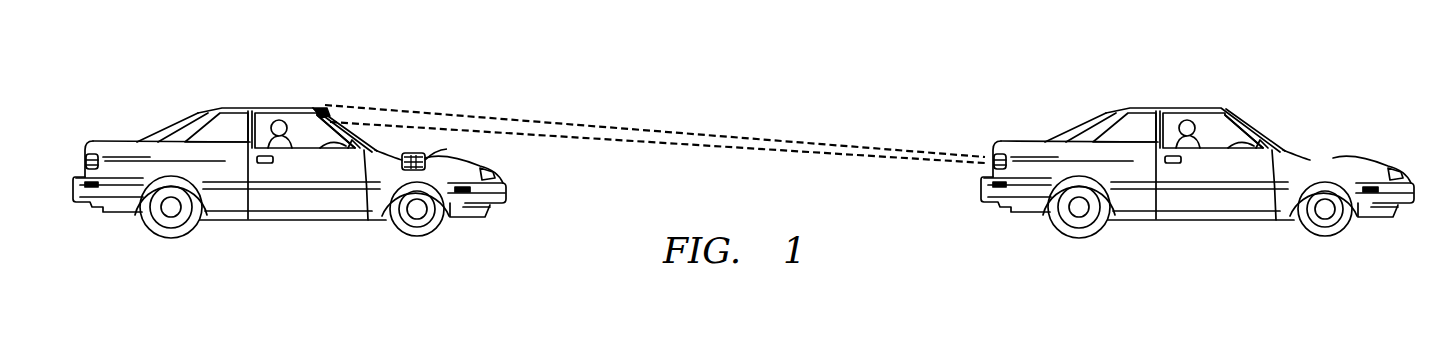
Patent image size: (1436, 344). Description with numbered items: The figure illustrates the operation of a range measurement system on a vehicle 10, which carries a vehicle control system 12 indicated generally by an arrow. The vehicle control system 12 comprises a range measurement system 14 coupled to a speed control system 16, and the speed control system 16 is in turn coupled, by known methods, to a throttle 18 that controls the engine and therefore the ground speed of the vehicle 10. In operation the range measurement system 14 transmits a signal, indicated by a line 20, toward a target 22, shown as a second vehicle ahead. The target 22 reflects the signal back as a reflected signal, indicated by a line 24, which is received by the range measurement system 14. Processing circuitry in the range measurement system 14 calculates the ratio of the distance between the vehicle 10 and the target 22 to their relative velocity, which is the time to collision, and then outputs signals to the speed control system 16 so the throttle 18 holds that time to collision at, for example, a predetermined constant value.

The vehicle 10 is at (243, 107).
The vehicle control system 12 is at (390, 90).
The range measurement system 14 is at (322, 108).
The speed control system 16 is at (412, 153).
The throttle 18 is at (440, 157).
The transmitted signal line 20 is at (662, 131).
The target 22 is at (1015, 141).
The reflected signal line 24 is at (664, 143).